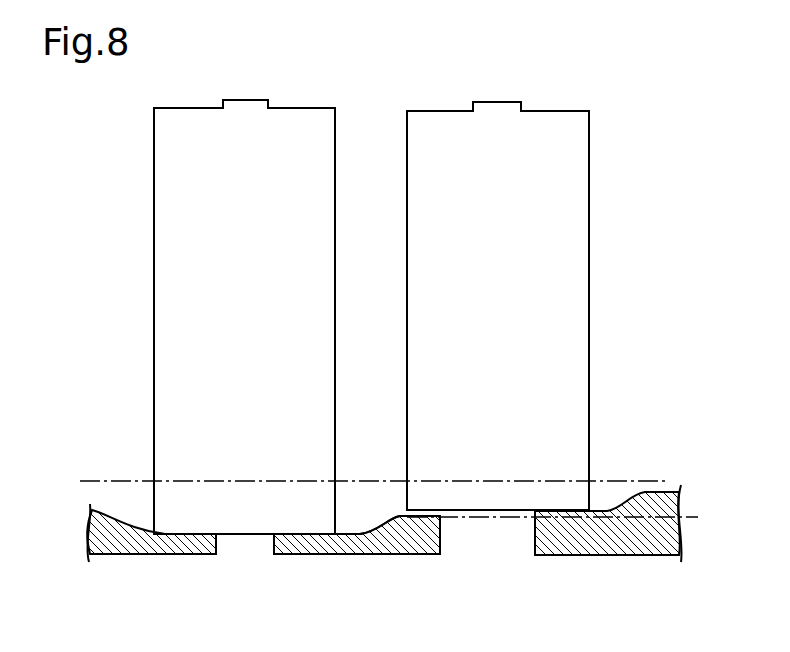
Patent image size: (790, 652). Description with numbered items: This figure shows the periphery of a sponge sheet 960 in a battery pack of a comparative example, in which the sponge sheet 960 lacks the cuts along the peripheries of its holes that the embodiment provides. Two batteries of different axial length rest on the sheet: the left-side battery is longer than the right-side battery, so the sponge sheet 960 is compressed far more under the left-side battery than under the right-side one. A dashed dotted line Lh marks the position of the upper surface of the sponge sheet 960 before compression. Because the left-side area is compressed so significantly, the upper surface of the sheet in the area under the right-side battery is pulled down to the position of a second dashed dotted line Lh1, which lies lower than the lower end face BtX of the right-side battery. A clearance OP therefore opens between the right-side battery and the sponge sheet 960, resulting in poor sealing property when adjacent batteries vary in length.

The sponge sheet 960 is at (356, 554).
The clearance OP is at (396, 512).
The lower end face BtX is at (475, 511).
The dashed dotted line Lh is at (623, 481).
The dashed dotted line Lh1 is at (574, 518).